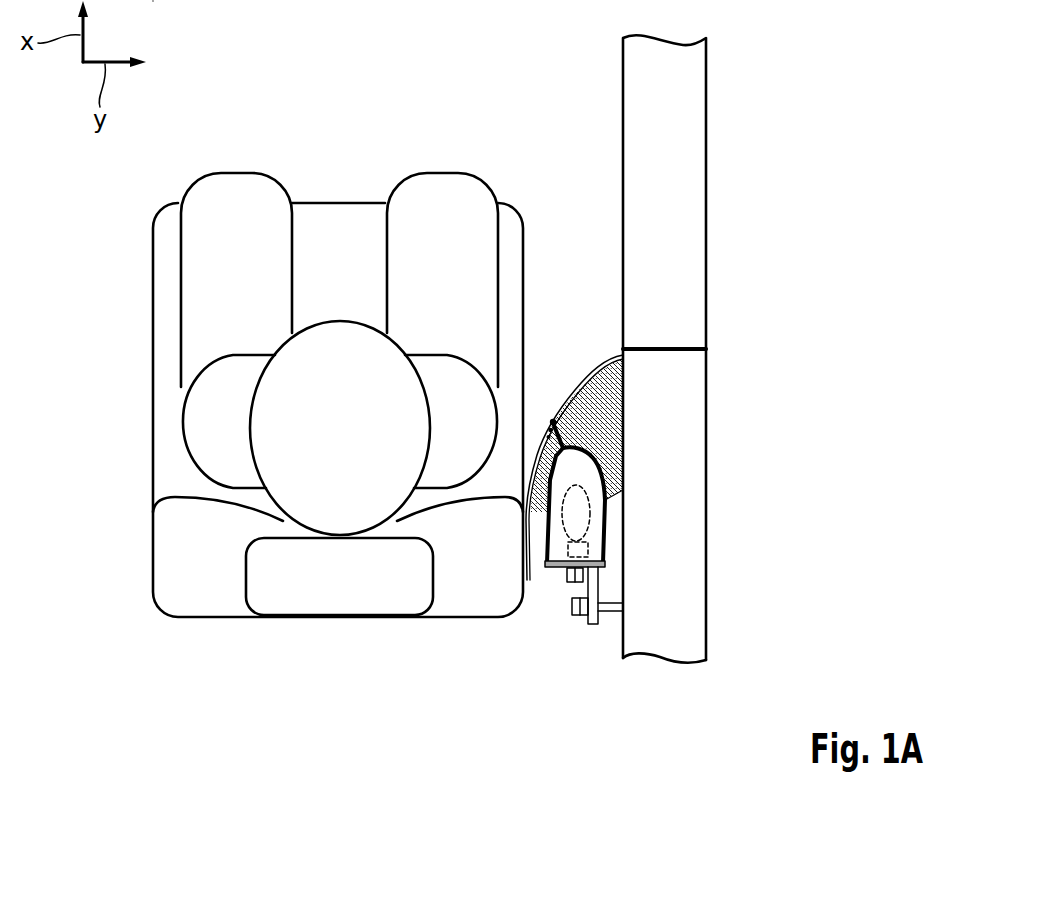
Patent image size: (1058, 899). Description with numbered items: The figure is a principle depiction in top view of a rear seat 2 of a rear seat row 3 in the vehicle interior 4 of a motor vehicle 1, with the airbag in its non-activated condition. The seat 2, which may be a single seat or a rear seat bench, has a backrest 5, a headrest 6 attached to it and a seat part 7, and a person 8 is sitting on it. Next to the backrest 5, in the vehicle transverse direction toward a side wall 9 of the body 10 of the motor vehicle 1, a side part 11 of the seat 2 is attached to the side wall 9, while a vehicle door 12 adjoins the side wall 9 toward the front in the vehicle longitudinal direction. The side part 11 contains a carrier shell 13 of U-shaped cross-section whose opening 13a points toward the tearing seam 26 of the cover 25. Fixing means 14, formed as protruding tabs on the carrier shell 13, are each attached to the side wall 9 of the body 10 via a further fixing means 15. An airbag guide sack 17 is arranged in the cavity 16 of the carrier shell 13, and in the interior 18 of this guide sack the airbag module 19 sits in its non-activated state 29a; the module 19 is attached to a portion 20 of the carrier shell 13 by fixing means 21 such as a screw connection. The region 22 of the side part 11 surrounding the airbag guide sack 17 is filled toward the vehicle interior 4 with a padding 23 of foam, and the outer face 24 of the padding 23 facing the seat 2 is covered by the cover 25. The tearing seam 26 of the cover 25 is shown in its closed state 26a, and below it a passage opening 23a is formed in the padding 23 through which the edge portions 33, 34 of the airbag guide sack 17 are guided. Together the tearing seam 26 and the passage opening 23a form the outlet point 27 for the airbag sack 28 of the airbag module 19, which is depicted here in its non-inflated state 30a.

The motor vehicle 1 is at (738, 349).
The rear seat 2 is at (277, 410).
The rear seat row 3 is at (277, 410).
The vehicle interior 4 is at (255, 93).
The backrest 5 is at (173, 567).
The headrest 6 is at (386, 614).
The seat part 7 is at (343, 219).
The person 8 is at (190, 421).
The side wall 9 is at (738, 349).
The body 10 is at (738, 349).
The side part 11 is at (738, 349).
The vehicle door 12 is at (738, 349).
The carrier shell 13 is at (386, 614).
The opening 13a is at (386, 614).
The fixing means 14 is at (662, 649).
The further fixing means 15 is at (610, 600).
The cavity 16 is at (283, 600).
The airbag guide sack 17 is at (664, 467).
The interior 18 is at (582, 475).
The airbag module 19 is at (691, 574).
The portion 20 is at (558, 577).
The fixing means 21 is at (598, 570).
The region 22 is at (738, 349).
The padding 23 is at (738, 349).
The passage opening 23a is at (556, 421).
The outer face 24 is at (693, 205).
The cover 25 is at (718, 435).
The tearing seam 26 is at (718, 435).
The closed state 26a is at (718, 435).
The outlet point 27 is at (558, 400).
The airbag sack 28 is at (688, 526).
The non-activated state 29a is at (578, 548).
The non-inflated state 30a is at (587, 504).
The edge portion 33 is at (732, 451).
The edge portion 34 is at (732, 451).